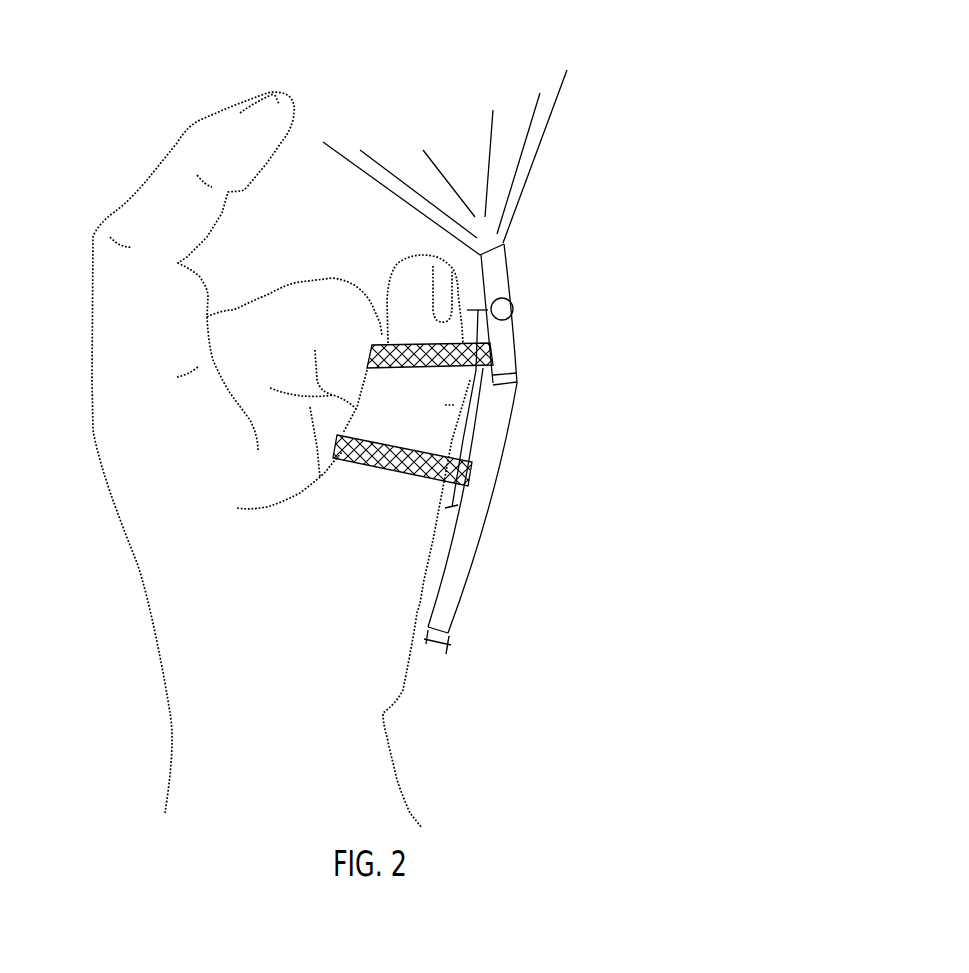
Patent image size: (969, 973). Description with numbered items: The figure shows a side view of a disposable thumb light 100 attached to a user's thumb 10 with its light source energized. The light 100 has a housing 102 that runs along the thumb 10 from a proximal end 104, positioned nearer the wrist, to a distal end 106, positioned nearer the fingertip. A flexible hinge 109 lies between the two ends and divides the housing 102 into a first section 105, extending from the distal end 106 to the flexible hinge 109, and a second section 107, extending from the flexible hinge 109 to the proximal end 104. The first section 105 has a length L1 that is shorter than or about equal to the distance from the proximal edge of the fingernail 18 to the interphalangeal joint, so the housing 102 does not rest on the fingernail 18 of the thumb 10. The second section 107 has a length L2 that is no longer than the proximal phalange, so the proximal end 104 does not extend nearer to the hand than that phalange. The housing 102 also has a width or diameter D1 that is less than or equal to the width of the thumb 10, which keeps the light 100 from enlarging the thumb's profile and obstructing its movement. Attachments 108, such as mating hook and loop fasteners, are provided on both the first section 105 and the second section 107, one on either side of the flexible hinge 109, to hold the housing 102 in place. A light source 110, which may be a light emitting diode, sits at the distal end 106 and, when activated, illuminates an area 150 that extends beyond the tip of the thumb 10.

The thumb 10 is at (281, 460).
The fingernail 18 is at (447, 277).
The light 100 is at (512, 392).
The housing 102 is at (465, 598).
The proximal end 104 is at (428, 652).
The first section 105 is at (508, 347).
The distal end 106 is at (520, 320).
The second section 107 is at (482, 493).
The attachment 108 is at (332, 442).
The flexible hinge 109 is at (518, 387).
The light source 110 is at (512, 308).
The illuminated area 150 is at (513, 133).
The diameter D1 is at (455, 646).
The length of first portion L1 is at (472, 372).
The length of second portion L2 is at (453, 442).